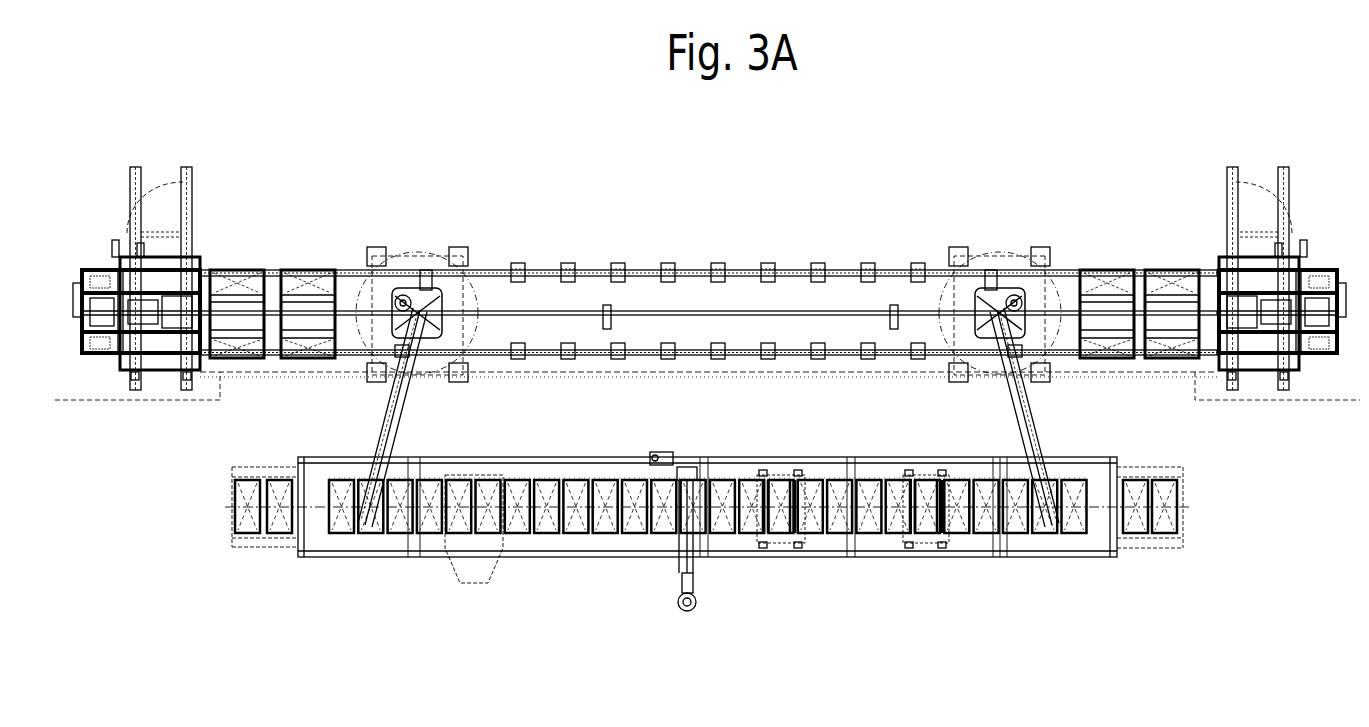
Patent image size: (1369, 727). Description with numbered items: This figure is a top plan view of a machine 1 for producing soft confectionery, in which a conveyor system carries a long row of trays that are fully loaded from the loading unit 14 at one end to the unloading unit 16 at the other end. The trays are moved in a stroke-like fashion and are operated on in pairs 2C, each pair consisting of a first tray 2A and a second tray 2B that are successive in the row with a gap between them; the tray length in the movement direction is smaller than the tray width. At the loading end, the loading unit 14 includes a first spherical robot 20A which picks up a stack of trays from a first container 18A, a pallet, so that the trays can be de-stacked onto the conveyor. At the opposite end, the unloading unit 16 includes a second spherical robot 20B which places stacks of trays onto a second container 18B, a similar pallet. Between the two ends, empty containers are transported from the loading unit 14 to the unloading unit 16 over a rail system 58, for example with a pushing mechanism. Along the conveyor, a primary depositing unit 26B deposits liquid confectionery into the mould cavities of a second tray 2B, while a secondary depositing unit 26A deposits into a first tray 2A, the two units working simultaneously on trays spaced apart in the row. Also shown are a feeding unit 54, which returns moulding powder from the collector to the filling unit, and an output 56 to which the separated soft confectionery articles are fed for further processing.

The machine 1 is at (1203, 547).
The first tray 2A is at (335, 538).
The second tray 2B is at (376, 538).
The pair of trays 2C is at (329, 450).
The loading unit 14 is at (394, 540).
The unloading unit 16 is at (1092, 542).
The first container 18A is at (332, 268).
The second container 18B is at (1085, 268).
The first spherical robot 20A is at (438, 280).
The second spherical robot 20B is at (1005, 285).
The secondary depositing unit 26A is at (935, 542).
The primary depositing unit 26B is at (790, 542).
The feeding unit 54 is at (695, 612).
The output 56 is at (459, 563).
The rail system 58 is at (693, 270).